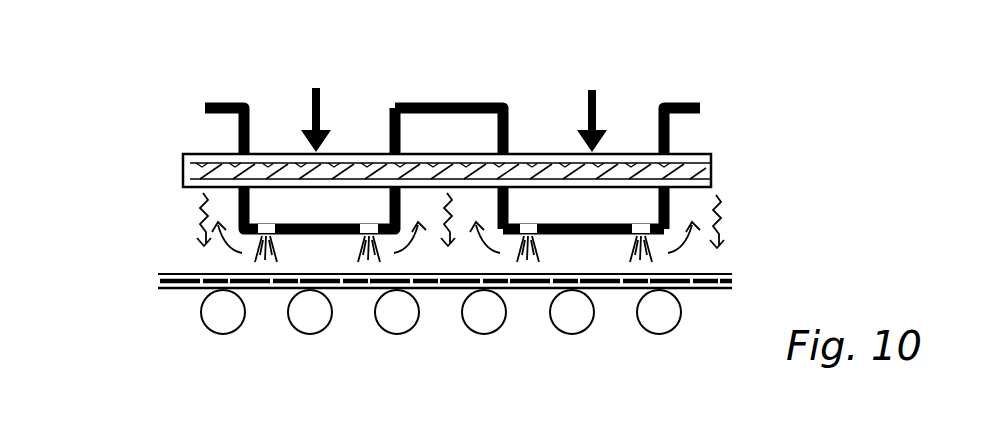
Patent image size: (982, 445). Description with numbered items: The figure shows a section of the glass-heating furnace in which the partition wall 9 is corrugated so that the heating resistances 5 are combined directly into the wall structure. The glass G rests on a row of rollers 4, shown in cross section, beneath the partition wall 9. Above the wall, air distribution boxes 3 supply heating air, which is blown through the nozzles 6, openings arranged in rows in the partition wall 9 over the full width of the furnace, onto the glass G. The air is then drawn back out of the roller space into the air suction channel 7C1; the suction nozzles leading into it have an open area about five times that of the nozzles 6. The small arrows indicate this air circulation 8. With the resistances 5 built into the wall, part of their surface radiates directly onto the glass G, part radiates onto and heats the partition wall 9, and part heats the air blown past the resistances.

The air distribution box 3 is at (452, 202).
The air suction channel 7C1 is at (430, 107).
The heating resistance 5 is at (686, 160).
The nozzle 6 is at (345, 241).
The cooling air flow 8 is at (157, 257).
The partition wall 9 is at (593, 233).
The glass G is at (173, 289).
The roller 4 is at (680, 318).